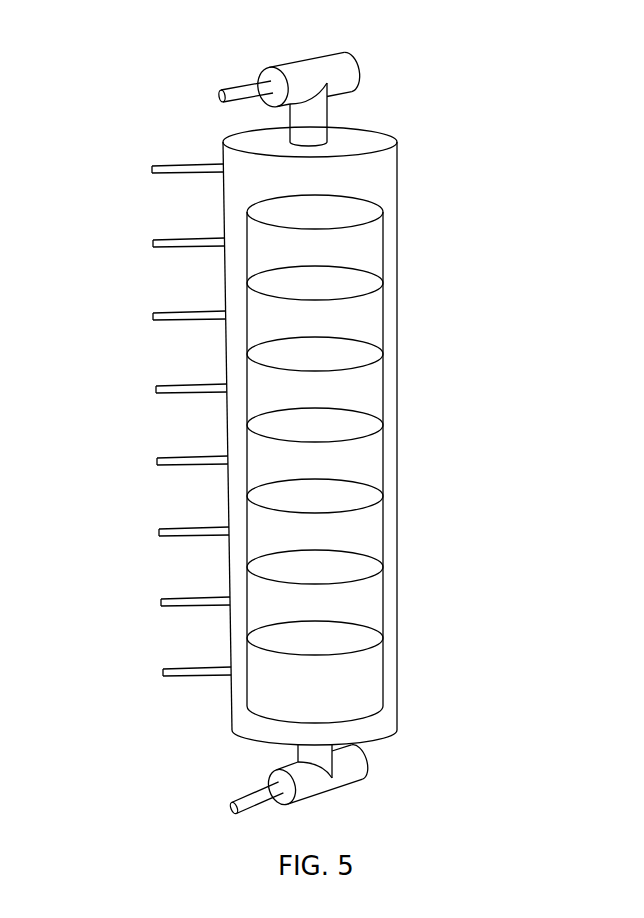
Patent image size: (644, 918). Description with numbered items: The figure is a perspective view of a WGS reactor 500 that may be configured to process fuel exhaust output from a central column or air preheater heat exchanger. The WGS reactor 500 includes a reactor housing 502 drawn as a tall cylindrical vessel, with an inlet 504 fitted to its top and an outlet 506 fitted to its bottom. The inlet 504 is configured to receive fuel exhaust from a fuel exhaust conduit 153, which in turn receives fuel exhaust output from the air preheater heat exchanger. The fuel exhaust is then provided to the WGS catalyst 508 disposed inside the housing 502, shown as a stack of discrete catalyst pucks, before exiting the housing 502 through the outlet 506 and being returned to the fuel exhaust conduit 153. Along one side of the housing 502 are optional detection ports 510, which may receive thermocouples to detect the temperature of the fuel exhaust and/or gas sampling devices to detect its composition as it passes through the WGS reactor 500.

The WGS reactor 500 is at (472, 158).
The reactor housing 502 is at (395, 435).
The inlet 504 is at (345, 65).
The outlet 506 is at (347, 773).
The WGS catalyst 508 is at (368, 333).
The detection ports 510 is at (153, 172).
The fuel exhaust conduit 153 is at (220, 96).